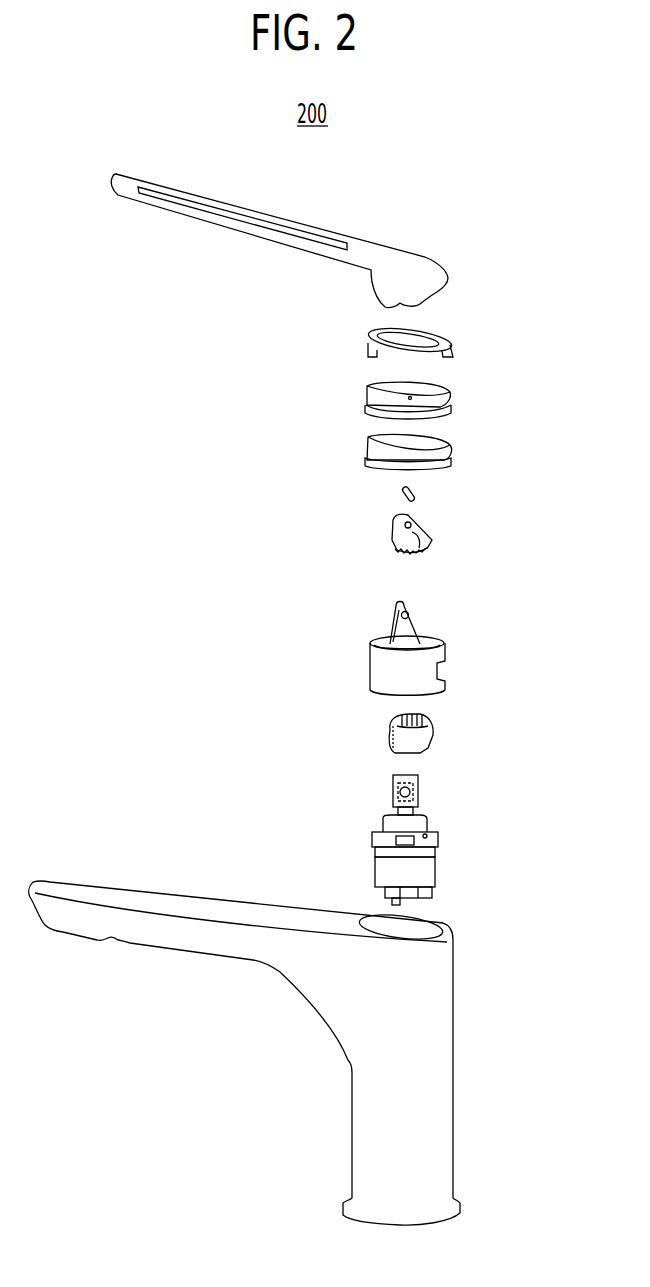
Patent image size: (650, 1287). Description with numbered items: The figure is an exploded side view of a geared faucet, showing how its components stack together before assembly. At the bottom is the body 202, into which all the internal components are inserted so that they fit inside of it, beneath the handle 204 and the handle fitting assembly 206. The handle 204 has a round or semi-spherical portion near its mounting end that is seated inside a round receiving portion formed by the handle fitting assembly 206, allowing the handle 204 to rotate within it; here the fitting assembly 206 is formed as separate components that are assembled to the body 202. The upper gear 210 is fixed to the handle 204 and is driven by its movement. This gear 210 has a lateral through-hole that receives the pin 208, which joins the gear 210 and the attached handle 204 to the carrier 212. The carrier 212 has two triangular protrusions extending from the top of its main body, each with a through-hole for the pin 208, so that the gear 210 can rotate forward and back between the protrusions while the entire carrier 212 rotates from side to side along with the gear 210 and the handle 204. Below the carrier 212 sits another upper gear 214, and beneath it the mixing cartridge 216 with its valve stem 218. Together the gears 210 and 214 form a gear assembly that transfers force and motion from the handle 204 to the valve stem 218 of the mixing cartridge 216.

The body 202 is at (167, 945).
The handle 204 is at (428, 258).
The handle fitting assembly 206 is at (475, 328).
The pin 208 is at (417, 493).
The upper gear 210 is at (435, 542).
The carrier 212 is at (450, 655).
The upper gear 214 is at (437, 733).
The mixing cartridge 216 is at (442, 848).
The valve stem 218 is at (425, 793).